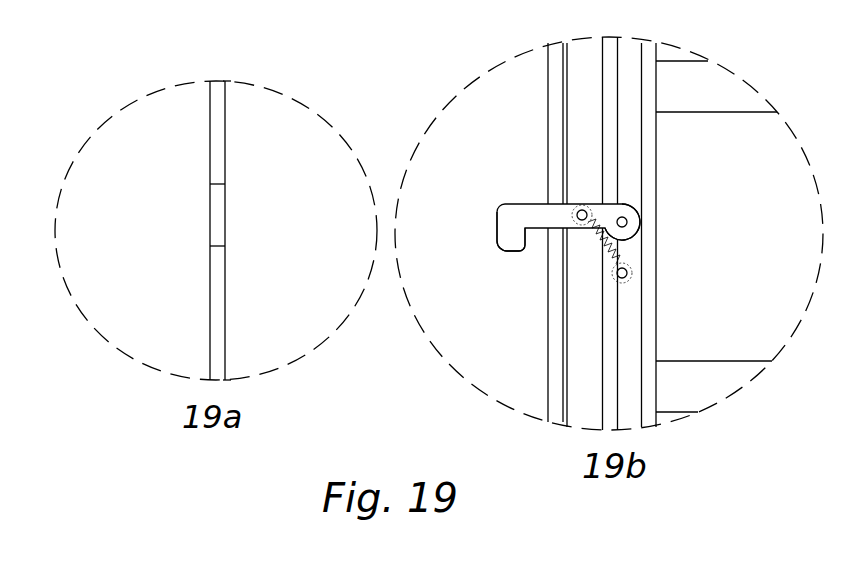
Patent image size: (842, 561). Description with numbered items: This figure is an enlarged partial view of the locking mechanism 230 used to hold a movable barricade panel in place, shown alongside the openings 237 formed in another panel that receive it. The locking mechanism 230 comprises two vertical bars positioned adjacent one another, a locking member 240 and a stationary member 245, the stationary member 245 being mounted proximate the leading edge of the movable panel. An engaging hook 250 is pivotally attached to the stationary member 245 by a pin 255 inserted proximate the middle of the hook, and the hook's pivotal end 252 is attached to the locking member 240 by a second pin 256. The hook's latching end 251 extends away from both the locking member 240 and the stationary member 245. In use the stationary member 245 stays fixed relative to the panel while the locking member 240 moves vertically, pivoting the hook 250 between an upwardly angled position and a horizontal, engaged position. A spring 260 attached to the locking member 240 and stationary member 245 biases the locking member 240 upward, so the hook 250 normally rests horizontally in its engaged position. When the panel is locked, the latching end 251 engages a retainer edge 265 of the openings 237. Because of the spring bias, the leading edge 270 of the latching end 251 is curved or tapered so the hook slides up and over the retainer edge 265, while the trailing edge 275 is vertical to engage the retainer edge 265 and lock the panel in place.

The locking mechanism 230 is at (560, 234).
The openings 237 is at (233, 195).
The locking member 240 is at (622, 110).
The stationary member 245 is at (585, 112).
The engaging hook 250 is at (527, 203).
The latching end 251 is at (498, 233).
The pivotal end 252 is at (632, 205).
The pin 255 is at (582, 209).
The pin 256 is at (626, 225).
The spring 260 is at (603, 257).
The retainer edge 265 is at (210, 246).
The leading edge 270 is at (507, 252).
The trailing edge 275 is at (525, 250).